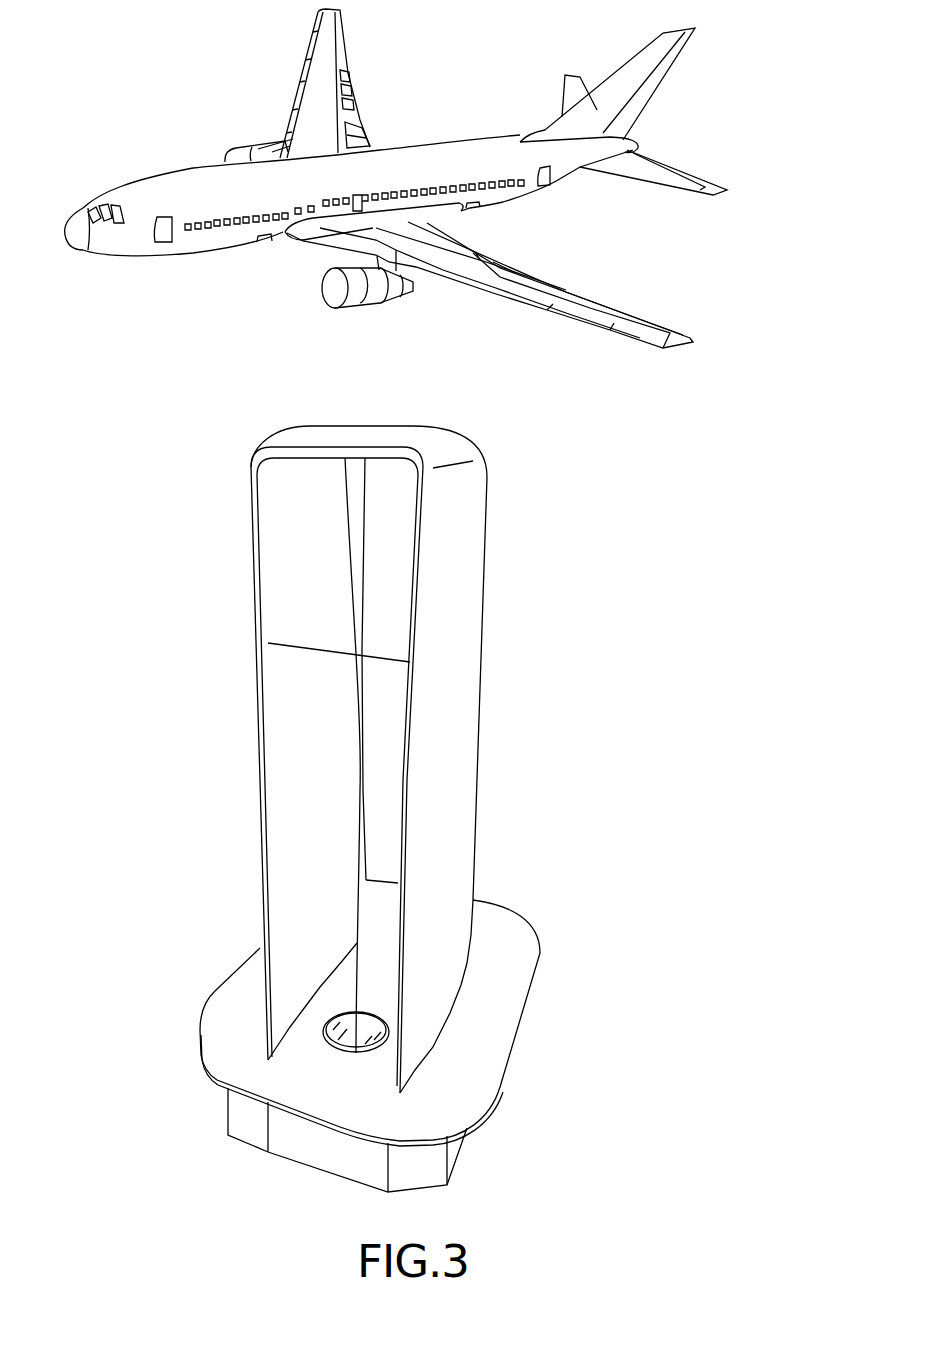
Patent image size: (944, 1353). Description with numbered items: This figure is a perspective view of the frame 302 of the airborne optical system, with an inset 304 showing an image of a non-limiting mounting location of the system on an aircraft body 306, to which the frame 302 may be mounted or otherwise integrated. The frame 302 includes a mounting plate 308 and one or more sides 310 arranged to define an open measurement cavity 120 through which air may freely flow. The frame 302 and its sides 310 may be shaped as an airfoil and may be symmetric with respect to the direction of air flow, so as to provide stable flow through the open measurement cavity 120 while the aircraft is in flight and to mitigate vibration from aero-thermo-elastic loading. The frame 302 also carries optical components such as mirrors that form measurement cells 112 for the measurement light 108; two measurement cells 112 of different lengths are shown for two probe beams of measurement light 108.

The inset 304 is at (130, 77).
The aircraft body 306 is at (168, 192).
The frame 302 is at (265, 436).
The sides 310 is at (375, 460).
The measurement cells 112 is at (383, 653).
The open measurement cavity 120 is at (372, 737).
The measurement light 108 is at (397, 662).
The mounting plate 308 is at (537, 935).